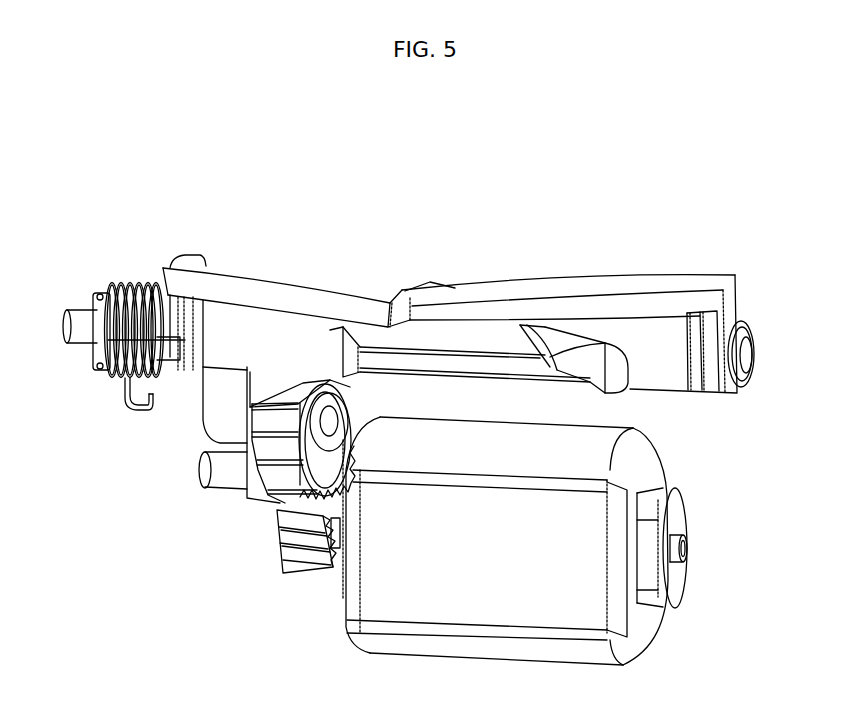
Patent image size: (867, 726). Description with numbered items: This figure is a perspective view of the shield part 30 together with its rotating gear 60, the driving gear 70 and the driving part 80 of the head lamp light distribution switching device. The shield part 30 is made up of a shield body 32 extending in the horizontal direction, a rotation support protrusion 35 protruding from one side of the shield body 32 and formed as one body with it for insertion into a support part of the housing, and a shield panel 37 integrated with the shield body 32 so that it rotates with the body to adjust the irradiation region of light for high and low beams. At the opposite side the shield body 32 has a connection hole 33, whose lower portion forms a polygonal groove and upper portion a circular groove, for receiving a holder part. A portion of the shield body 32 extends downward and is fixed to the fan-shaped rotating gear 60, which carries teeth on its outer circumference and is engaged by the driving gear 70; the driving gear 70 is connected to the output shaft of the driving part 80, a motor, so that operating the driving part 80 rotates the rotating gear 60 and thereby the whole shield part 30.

The shield part 30 is at (455, 198).
The shield body 32 is at (483, 367).
The connection hole 33 is at (752, 347).
The rotation support protrusion 35 is at (80, 317).
The shield panel 37 is at (347, 290).
The rotating gear 60 is at (275, 455).
The driving gear 70 is at (307, 553).
The driving part 80 is at (488, 651).